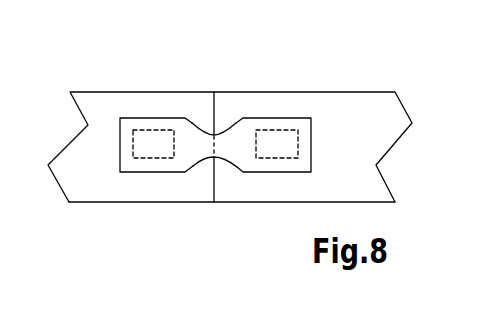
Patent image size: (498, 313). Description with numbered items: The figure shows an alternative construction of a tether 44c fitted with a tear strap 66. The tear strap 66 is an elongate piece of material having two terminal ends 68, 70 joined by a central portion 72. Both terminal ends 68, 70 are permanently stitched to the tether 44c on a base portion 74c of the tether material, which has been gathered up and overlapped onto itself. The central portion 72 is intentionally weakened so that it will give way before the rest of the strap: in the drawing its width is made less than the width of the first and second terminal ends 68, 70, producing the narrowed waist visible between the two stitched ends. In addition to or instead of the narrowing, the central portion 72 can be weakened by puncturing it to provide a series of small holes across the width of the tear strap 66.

The tether 44c is at (96, 110).
The tear strap 66 is at (235, 143).
The first terminal end 68 is at (305, 132).
The second terminal end 70 is at (122, 153).
The central portion 72 is at (216, 135).
The base portion 74c is at (144, 186).